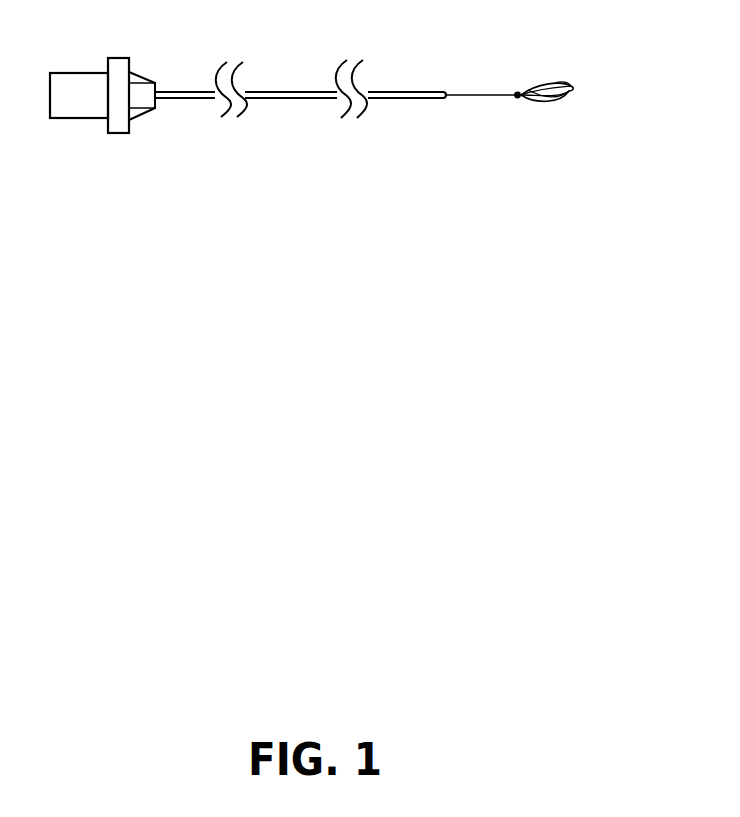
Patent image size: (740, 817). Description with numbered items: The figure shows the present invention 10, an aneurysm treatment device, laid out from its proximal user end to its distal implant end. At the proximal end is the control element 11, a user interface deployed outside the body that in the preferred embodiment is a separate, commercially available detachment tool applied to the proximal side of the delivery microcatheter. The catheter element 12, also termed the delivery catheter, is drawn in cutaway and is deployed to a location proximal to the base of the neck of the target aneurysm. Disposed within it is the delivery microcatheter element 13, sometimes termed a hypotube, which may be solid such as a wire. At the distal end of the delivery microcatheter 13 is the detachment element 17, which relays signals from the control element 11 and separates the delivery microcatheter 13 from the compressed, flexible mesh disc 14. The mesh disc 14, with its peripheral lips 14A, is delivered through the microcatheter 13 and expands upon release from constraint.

The present invention 10 is at (645, 183).
The control element 11 is at (80, 73).
The catheter element 12 is at (185, 92).
The delivery microcatheter element 13 is at (480, 94).
The mesh disc 14 is at (557, 103).
The peripheral lips 14A is at (570, 83).
The detachment element 17 is at (517, 98).